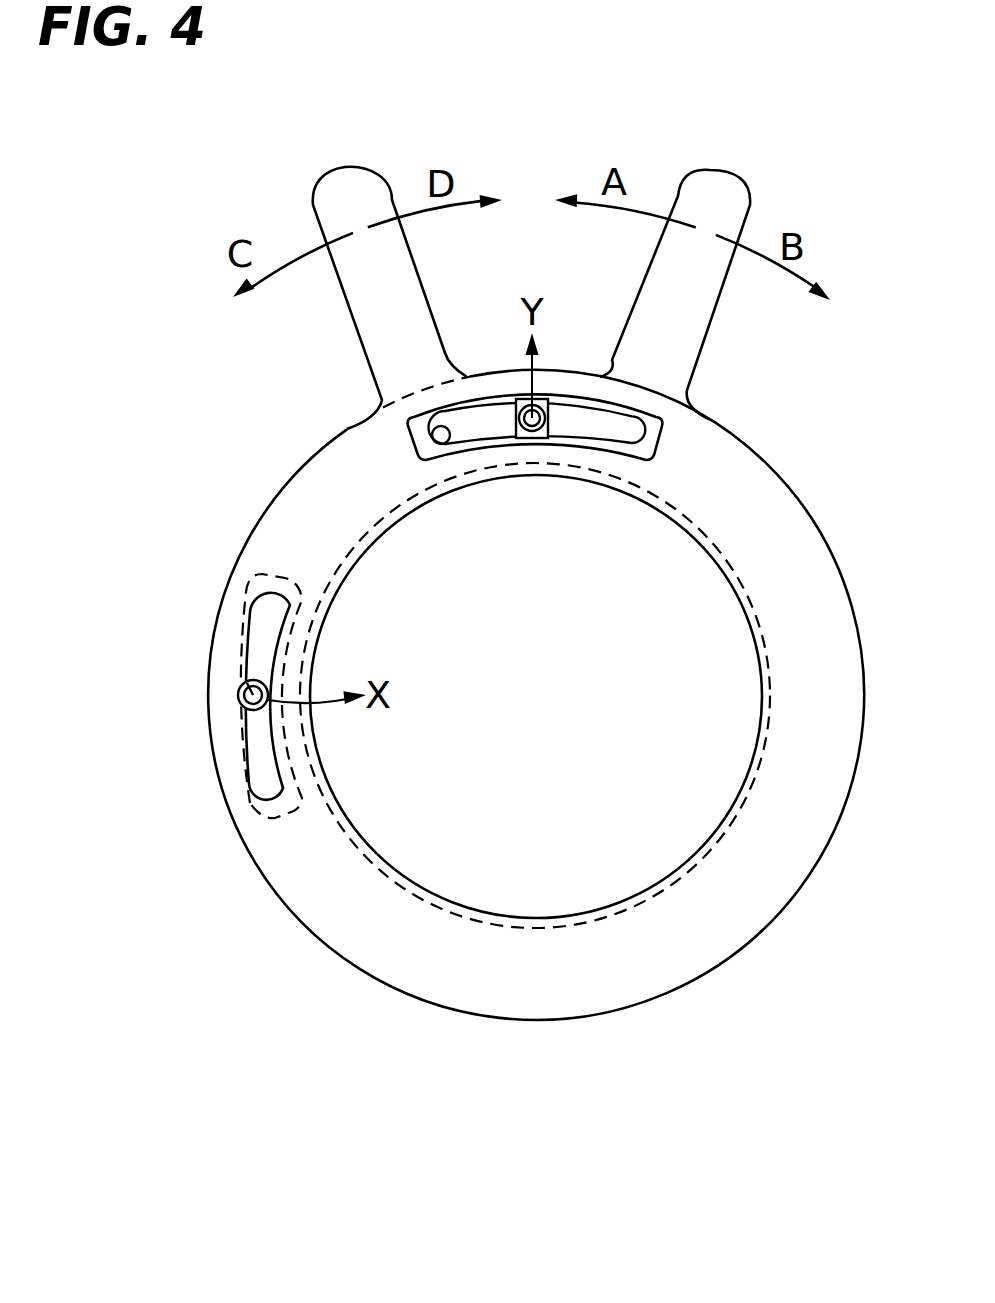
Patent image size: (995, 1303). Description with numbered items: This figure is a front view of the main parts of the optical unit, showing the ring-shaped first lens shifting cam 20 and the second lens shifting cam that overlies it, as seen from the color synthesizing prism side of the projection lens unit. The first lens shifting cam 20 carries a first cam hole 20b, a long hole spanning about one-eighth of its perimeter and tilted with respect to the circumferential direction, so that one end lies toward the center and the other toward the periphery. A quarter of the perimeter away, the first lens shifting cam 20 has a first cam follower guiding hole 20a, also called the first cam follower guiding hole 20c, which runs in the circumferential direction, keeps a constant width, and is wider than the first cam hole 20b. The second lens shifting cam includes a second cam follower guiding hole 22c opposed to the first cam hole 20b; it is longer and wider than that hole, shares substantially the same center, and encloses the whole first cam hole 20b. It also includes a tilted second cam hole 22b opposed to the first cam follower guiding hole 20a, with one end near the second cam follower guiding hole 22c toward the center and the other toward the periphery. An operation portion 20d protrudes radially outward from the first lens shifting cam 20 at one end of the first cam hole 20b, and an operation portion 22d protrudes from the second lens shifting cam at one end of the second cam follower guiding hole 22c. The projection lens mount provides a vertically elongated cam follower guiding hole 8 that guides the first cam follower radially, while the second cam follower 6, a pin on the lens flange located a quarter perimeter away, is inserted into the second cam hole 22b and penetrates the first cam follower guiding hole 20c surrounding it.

The first lens shifting cam 20 is at (533, 1008).
The first cam follower guiding hole 20a is at (727, 817).
The first cam hole 20b is at (255, 770).
The first cam follower guiding hole 20c is at (663, 448).
The operation portion 20d is at (345, 187).
The second cam hole 22b is at (408, 424).
The second cam follower guiding hole 22c is at (283, 818).
The operation portion 22d is at (720, 190).
The second cam follower 6 is at (247, 690).
The cam follower guiding hole 8 is at (518, 400).